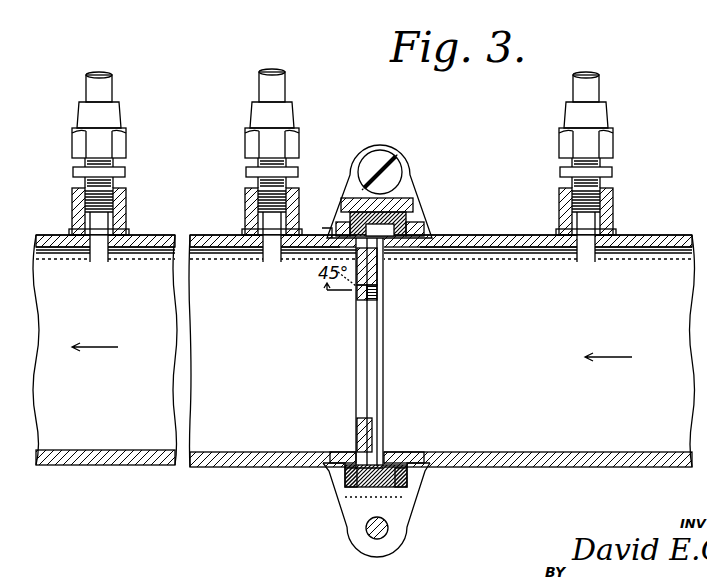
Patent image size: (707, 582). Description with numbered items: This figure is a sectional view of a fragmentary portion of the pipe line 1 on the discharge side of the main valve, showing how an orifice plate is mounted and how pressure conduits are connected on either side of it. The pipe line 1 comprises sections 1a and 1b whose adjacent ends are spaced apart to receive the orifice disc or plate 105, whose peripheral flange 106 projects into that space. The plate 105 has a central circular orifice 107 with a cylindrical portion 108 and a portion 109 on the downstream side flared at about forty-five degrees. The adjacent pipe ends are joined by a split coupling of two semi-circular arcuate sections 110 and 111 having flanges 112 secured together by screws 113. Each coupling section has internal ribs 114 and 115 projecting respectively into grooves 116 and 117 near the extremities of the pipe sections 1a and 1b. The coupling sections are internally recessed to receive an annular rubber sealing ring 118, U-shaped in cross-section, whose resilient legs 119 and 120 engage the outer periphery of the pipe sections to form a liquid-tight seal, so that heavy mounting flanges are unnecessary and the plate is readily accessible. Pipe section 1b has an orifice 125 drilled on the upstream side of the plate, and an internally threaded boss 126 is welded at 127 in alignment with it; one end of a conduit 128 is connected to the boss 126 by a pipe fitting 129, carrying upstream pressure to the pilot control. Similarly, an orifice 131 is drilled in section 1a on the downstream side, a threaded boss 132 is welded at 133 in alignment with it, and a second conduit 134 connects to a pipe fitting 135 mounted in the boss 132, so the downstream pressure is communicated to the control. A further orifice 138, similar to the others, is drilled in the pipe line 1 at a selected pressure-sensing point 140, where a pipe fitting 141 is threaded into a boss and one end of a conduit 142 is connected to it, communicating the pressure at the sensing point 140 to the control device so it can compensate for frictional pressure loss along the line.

The pipe line 1 is at (682, 236).
The pipe section 1a is at (196, 468).
The pipe section 1b is at (517, 468).
The orifice plate 105 is at (372, 425).
The peripheral flange 106 is at (386, 252).
The orifice 107 is at (378, 358).
The cylindrical portion 108 is at (378, 295).
The flared portion 109 is at (360, 354).
The coupling section 110 is at (406, 200).
The coupling section 111 is at (430, 236).
The flange 112 is at (379, 150).
The screw 113 is at (396, 162).
The internal rib 114 is at (345, 461).
The internal rib 115 is at (412, 464).
The groove 116 is at (326, 237).
The groove 117 is at (428, 468).
The rubber sealing ring 118 is at (412, 215).
The resilient leg 119 is at (355, 460).
The resilient leg 120 is at (386, 464).
The orifice 125 is at (556, 260).
The threaded boss 126 is at (607, 208).
The weld 127 is at (608, 219).
The conduit 128 is at (601, 115).
The pipe fitting 129 is at (607, 170).
The orifice 131 is at (265, 261).
The threaded boss 132 is at (249, 207).
The weld 133 is at (247, 219).
The conduit 134 is at (288, 110).
The pipe fitting 135 is at (249, 165).
The orifice 138 is at (105, 256).
The pressure-sensing point 140 is at (103, 272).
The pipe fitting 141 is at (114, 170).
The conduit 142 is at (104, 90).